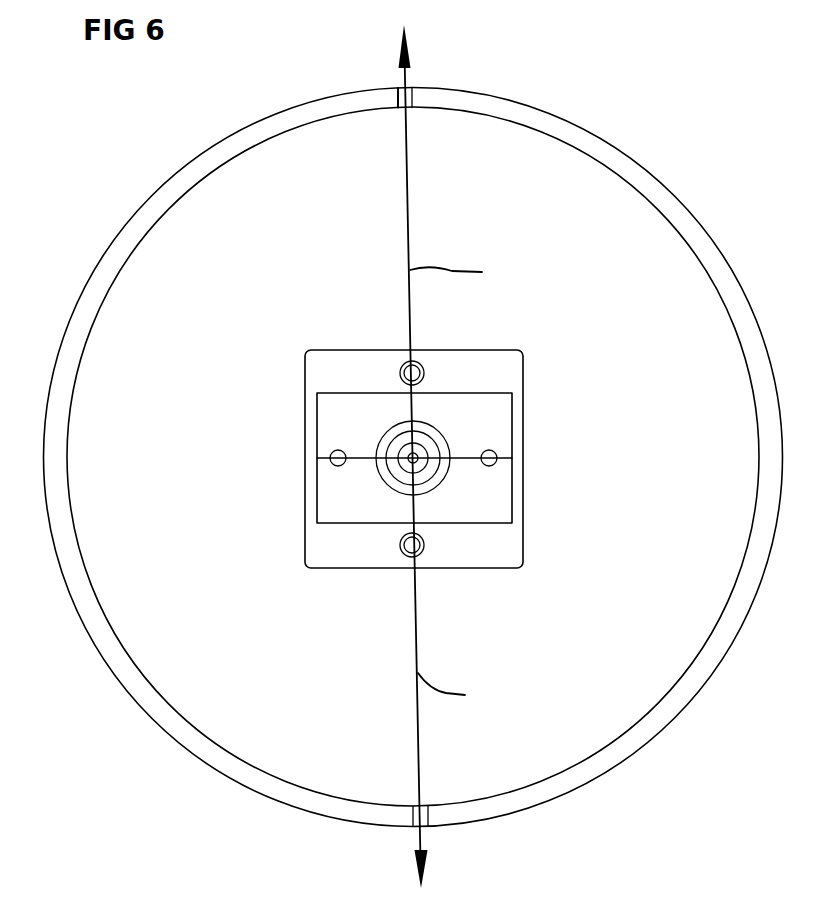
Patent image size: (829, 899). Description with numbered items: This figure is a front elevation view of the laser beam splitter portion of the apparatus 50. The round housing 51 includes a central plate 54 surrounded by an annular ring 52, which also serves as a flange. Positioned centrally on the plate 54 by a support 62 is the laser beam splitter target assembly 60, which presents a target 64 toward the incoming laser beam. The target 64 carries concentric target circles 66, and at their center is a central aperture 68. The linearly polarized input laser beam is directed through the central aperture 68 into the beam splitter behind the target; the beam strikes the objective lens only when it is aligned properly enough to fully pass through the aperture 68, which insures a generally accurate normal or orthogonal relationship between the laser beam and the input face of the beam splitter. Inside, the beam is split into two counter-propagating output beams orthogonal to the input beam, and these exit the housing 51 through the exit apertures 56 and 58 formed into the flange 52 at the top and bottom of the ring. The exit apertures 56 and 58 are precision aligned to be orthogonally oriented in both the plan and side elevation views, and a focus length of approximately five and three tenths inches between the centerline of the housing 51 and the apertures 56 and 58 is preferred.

The apparatus 50 is at (138, 150).
The housing 51 is at (668, 178).
The annular ring 52 is at (583, 140).
The plate 54 is at (643, 630).
The exit aperture 56 is at (413, 97).
The exit aperture 58 is at (428, 812).
The laser beam splitter target assembly 60 is at (530, 426).
The support 62 is at (462, 572).
The target 64 is at (475, 525).
The concentric target circles 66 is at (432, 462).
The central aperture 68 is at (415, 456).